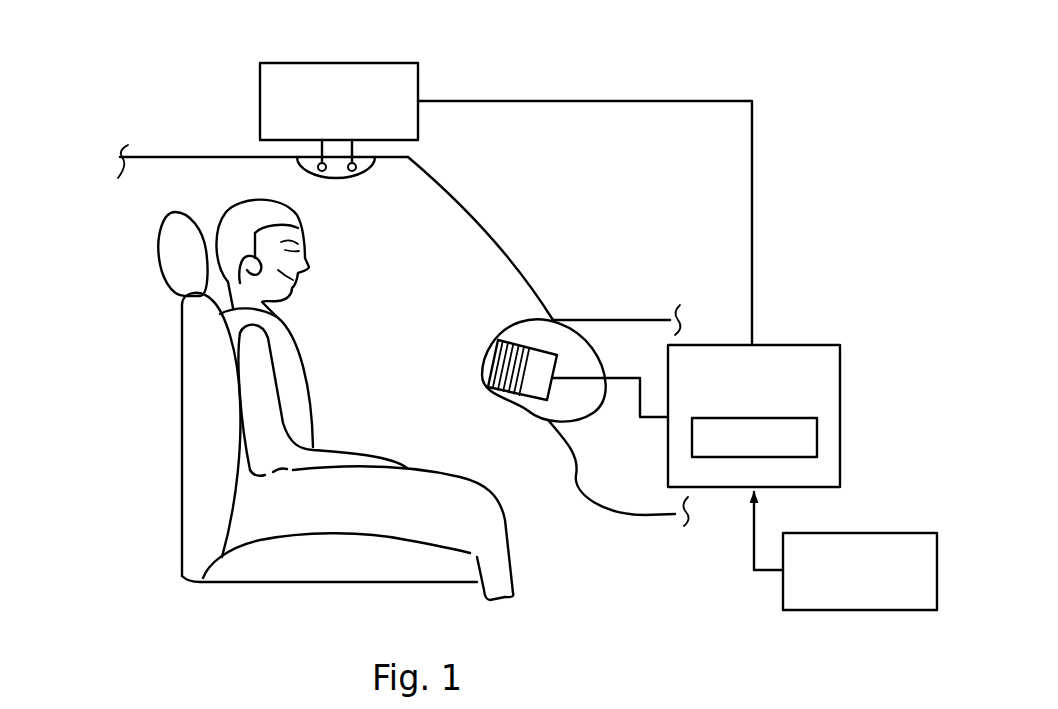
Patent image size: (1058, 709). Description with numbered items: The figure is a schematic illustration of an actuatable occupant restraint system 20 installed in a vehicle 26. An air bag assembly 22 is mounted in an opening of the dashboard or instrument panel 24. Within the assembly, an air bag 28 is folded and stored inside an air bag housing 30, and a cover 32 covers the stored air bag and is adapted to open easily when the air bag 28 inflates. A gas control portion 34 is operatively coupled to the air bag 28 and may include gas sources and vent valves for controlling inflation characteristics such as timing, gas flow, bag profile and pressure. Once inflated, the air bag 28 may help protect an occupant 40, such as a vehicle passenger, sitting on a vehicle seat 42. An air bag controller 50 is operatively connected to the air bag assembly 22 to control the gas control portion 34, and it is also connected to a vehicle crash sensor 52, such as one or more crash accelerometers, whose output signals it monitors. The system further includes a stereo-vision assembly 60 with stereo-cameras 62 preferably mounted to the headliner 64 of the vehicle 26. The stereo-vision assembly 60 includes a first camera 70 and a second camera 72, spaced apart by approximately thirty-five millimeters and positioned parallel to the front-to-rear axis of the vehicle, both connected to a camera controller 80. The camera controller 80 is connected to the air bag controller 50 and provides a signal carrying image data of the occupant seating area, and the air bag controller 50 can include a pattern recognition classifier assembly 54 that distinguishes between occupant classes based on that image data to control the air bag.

The actuatable occupant restraint system 20 is at (650, 64).
The air bag assembly 22 is at (534, 368).
The instrument panel 24 is at (536, 390).
The vehicle 26 is at (232, 127).
The air bag 28 is at (490, 387).
The air bag housing 30 is at (528, 398).
The cover 32 is at (485, 357).
The gas control portion 34 is at (547, 401).
The occupant 40 is at (287, 325).
The vehicle seat 42 is at (179, 380).
The air bag controller 50 is at (782, 394).
The vehicle crash sensor 52 is at (865, 528).
The pattern recognition classifier assembly 54 is at (755, 458).
The stereo-vision assembly 60 is at (258, 110).
The stereo-cameras 62 is at (328, 180).
The headliner 64 is at (225, 158).
The first camera 70 is at (322, 180).
The second camera 72 is at (360, 175).
The camera controller 80 is at (402, 62).